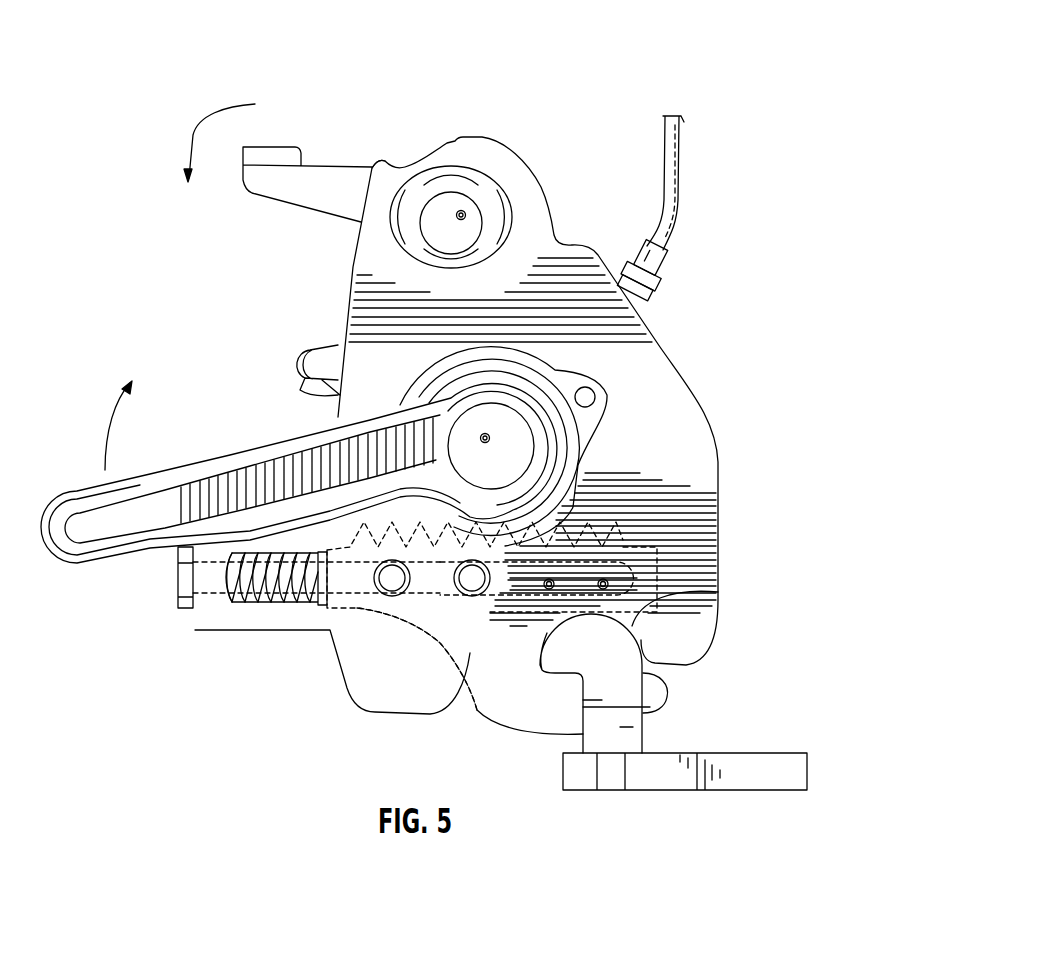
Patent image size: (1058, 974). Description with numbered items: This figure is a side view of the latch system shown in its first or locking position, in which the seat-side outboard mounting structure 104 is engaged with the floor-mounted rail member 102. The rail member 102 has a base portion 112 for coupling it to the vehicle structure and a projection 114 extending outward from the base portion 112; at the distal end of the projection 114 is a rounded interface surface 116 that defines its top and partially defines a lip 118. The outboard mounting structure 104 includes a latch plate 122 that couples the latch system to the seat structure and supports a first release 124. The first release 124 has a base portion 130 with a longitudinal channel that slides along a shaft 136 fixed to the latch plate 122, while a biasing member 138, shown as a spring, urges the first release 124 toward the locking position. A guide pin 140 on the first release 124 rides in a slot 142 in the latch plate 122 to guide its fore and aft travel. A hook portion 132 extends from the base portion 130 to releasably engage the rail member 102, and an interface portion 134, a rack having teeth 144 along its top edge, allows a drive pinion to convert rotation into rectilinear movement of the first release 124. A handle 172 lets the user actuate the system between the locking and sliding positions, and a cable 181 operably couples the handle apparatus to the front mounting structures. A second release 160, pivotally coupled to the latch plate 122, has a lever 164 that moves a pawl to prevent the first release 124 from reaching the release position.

The rail member 102 is at (549, 747).
The outboard mounting structure 104 is at (527, 115).
The base portion 112 is at (740, 753).
The projection 114 is at (600, 706).
The interface surface 116 is at (688, 592).
The lip 118 is at (559, 677).
The latch plate 122 is at (357, 310).
The first release 124 is at (406, 641).
The base portion 130 is at (547, 633).
The hook portion 132 is at (545, 718).
The interface portion 134 is at (577, 526).
The shaft 136 is at (237, 578).
The biasing member 138 is at (295, 597).
The guide pin 140 is at (432, 583).
The slot 142 is at (600, 542).
The teeth 144 is at (573, 580).
The second release 160 is at (340, 152).
The lever 164 is at (277, 157).
The handle 172 is at (98, 523).
The cable 181 is at (675, 193).